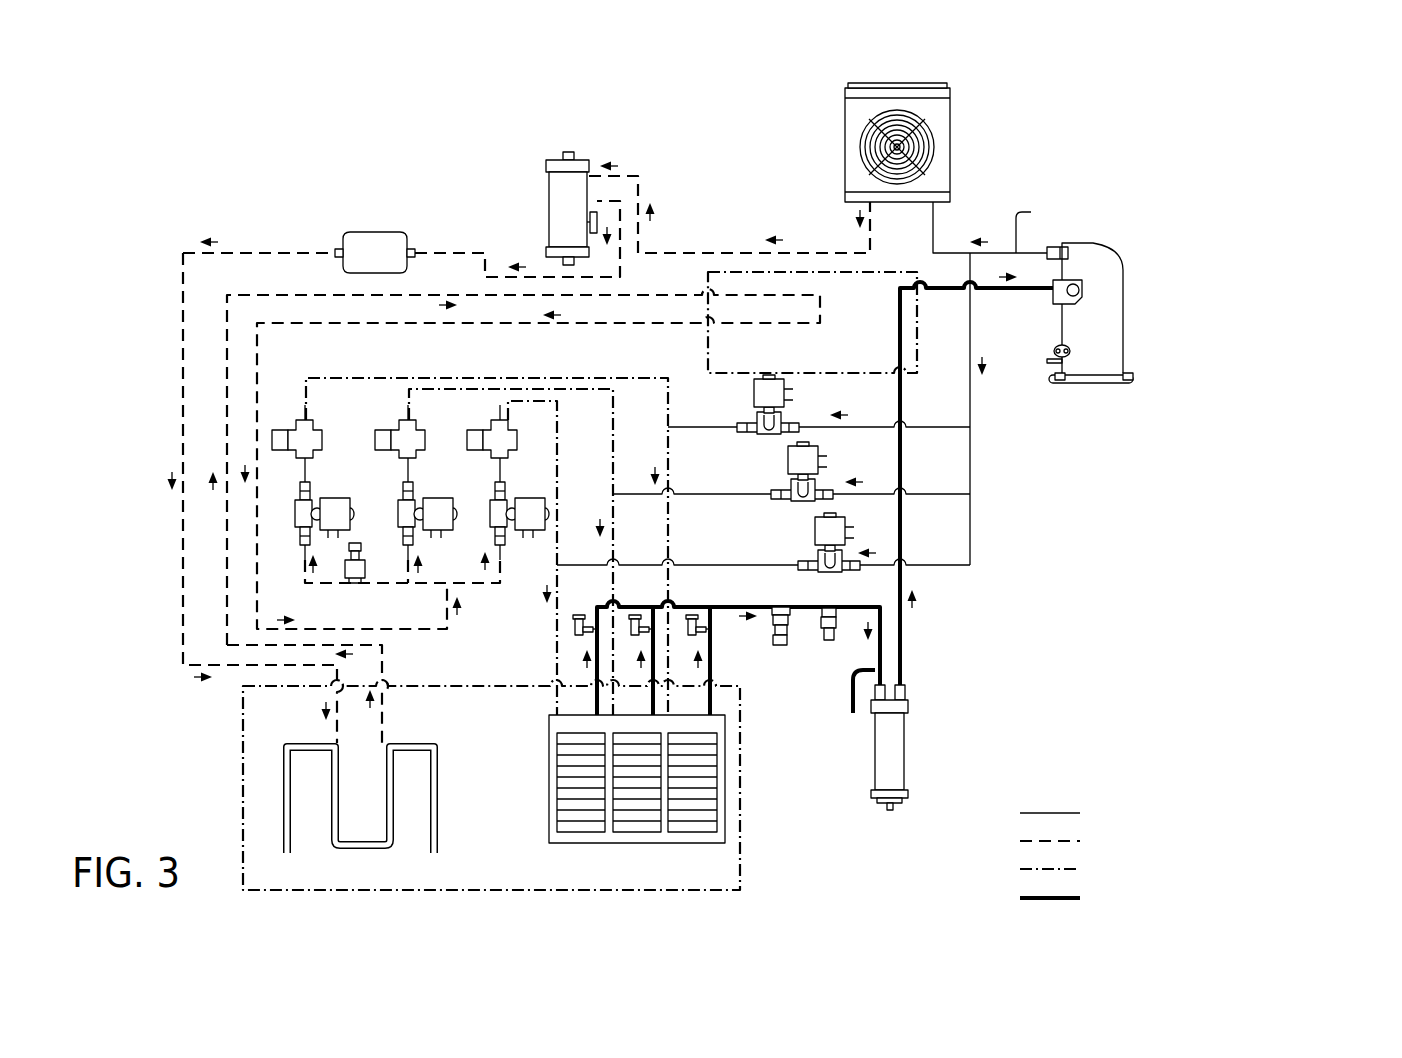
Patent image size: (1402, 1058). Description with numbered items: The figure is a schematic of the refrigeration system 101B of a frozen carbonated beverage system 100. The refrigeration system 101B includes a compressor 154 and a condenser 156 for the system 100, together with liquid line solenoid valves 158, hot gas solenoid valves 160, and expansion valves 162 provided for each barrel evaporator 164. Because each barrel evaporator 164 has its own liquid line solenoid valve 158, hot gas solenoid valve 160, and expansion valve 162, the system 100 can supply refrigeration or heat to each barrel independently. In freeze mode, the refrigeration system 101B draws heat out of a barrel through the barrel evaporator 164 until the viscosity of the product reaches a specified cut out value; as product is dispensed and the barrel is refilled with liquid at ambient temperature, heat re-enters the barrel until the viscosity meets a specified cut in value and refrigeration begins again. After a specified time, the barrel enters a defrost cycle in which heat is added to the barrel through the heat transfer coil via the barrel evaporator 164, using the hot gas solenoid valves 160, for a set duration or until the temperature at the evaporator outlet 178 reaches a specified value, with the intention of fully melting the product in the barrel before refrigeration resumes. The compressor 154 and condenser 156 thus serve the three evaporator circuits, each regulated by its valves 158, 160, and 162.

The system 100 is at (130, 130).
The refrigeration system 101B is at (1155, 120).
The compressor 154 is at (1137, 313).
The condenser 156 is at (960, 150).
The liquid line solenoid valves 158 is at (312, 495).
The hot gas solenoid valves 160 is at (795, 411).
The expansion valves 162 is at (320, 420).
The barrel evaporator 164 is at (686, 761).
The evaporator outlet 178 is at (712, 710).